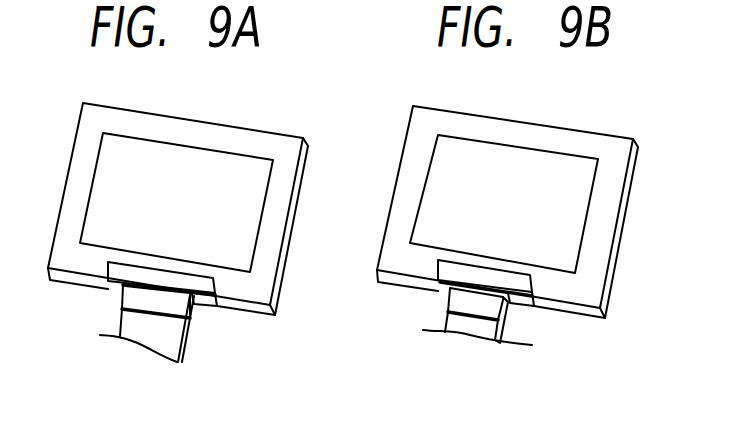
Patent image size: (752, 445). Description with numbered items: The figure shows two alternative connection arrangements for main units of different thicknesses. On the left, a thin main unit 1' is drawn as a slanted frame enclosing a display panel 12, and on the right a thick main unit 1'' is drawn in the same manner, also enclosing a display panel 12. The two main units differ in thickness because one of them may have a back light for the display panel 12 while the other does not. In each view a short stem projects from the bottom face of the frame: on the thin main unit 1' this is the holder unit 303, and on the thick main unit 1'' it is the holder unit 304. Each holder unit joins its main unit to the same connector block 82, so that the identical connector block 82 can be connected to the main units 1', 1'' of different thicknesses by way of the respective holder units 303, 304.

In FIG. 9A, the thin main unit 1' is at (178, 195).
In FIG. 9B, the thick main unit 1'' is at (507, 198).
In FIG. 9A, the display panel 12 is at (248, 193).
In FIG. 9B, the display panel 12 is at (575, 193).
In FIG. 9A, the holder unit 303 is at (135, 298).
In FIG. 9B, the holder unit 304 is at (465, 305).
In FIG. 9A, the connector block 82 is at (163, 333).
In FIG. 9B, the connector block 82 is at (482, 322).